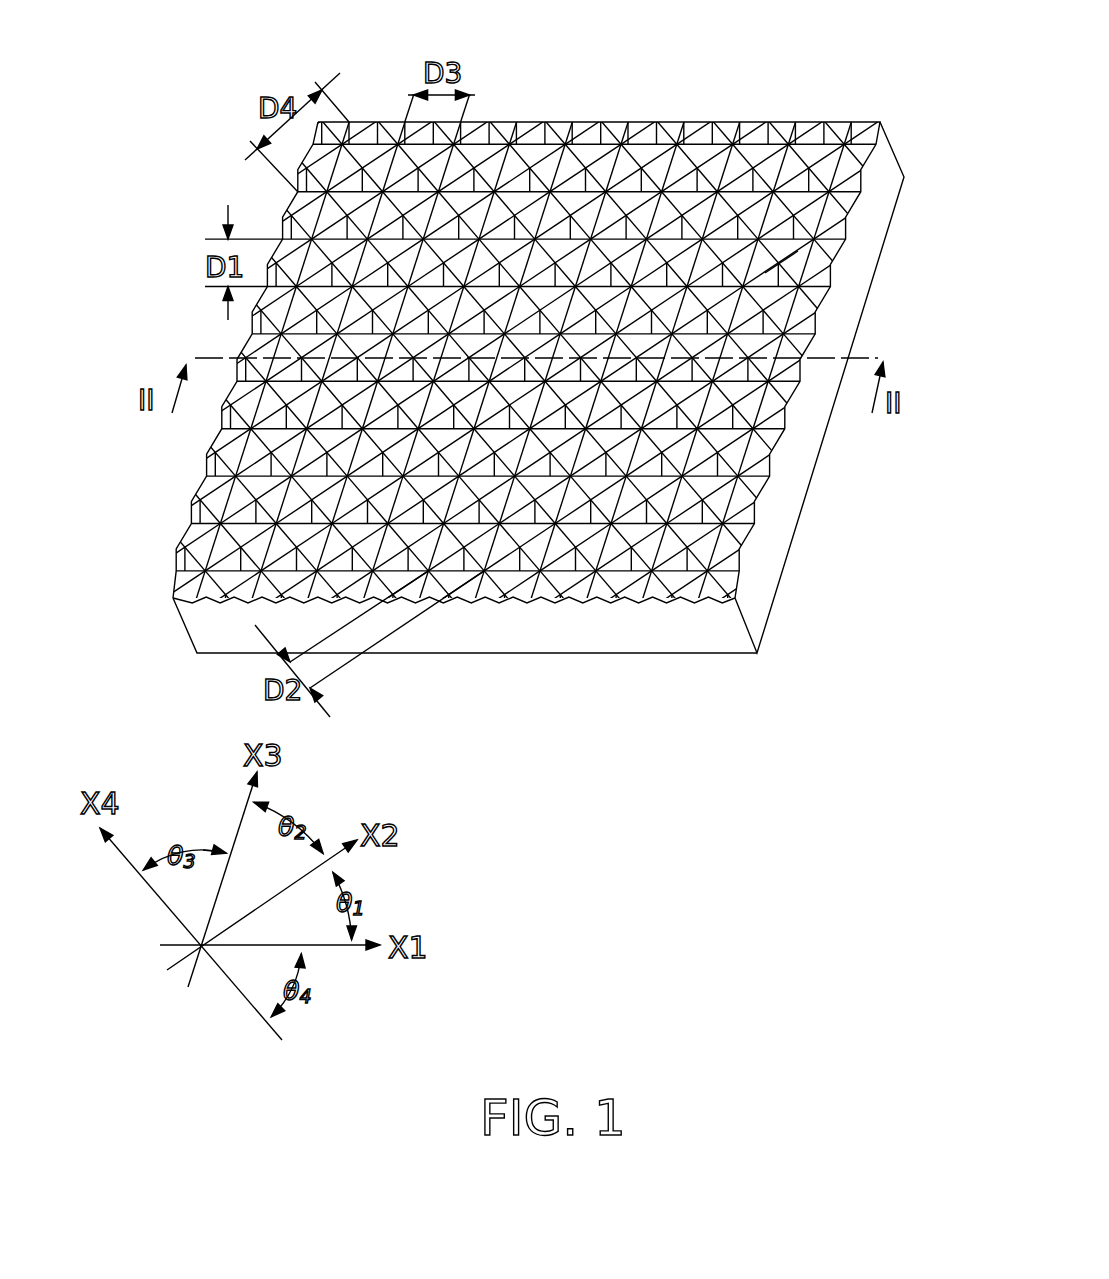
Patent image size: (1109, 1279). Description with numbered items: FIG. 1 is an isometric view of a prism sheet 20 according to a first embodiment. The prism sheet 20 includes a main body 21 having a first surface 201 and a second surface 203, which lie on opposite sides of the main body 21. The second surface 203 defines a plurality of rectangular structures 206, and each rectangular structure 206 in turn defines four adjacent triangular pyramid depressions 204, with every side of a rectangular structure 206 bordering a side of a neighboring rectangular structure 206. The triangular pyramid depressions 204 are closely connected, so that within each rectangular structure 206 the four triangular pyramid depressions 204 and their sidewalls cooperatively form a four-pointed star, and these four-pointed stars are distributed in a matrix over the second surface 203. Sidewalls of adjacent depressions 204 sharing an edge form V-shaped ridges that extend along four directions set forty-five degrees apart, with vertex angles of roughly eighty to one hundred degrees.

The prism sheet 20 is at (552, 398).
The main body 21 is at (780, 532).
The first surface 201 is at (591, 655).
The second surface 203 is at (778, 468).
The triangular pyramid depression 204 is at (785, 282).
The rectangular structure 206 is at (783, 263).